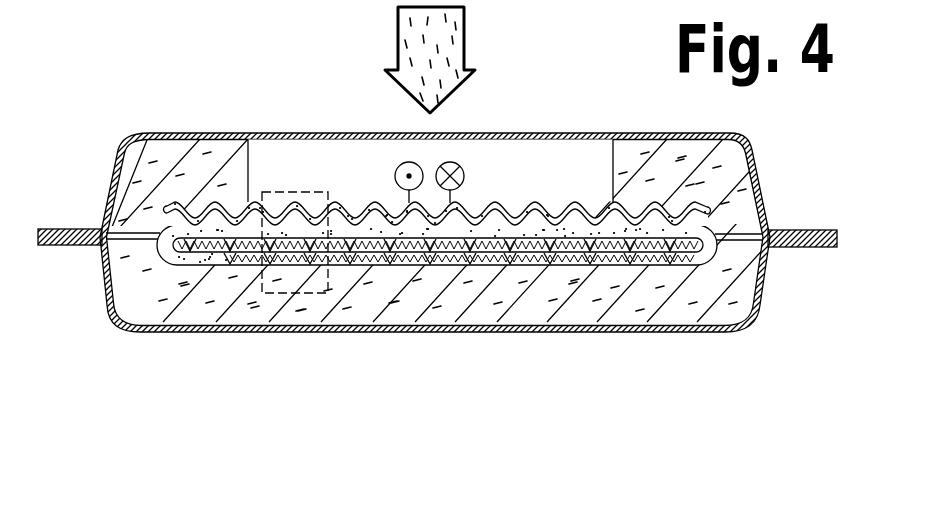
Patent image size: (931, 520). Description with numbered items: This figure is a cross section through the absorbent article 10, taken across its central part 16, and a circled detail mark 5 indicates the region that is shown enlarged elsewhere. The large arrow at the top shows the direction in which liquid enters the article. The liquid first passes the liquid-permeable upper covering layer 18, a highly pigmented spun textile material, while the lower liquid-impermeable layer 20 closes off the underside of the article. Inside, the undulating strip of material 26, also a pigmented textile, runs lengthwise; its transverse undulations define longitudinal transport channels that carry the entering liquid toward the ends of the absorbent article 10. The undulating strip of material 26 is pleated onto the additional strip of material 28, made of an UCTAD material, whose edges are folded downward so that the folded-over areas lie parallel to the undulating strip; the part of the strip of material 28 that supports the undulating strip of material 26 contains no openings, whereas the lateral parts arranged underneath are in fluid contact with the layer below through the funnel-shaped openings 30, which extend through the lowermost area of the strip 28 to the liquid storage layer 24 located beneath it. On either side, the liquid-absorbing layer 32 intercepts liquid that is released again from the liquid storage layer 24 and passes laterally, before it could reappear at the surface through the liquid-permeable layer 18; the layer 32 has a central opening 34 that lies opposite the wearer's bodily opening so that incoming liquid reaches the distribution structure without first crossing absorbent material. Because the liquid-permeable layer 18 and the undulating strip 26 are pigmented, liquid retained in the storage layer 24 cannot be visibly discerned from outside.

The absorbent article 10 is at (110, 102).
The central part 16 is at (364, 129).
The liquid-permeable upper covering layer 18 is at (750, 147).
The lower liquid-impermeable layer 20 is at (676, 331).
The liquid storage layer 24 is at (193, 297).
The undulating strip of material 26 is at (558, 200).
The additional strip of material 28 is at (722, 243).
The funnel-shaped openings 30 is at (512, 260).
The liquid-absorbing layer 32 is at (125, 196).
The central opening 34 is at (523, 157).
The detail callout (FIG. 5) 5 is at (299, 192).